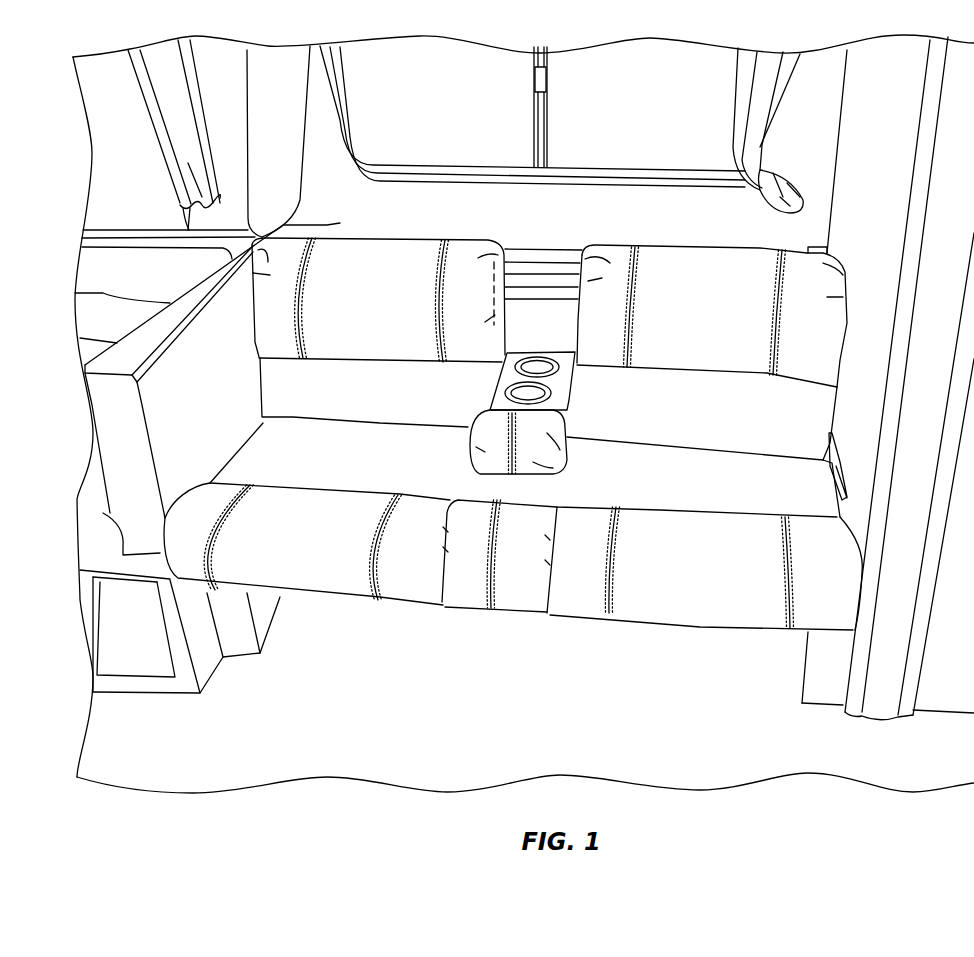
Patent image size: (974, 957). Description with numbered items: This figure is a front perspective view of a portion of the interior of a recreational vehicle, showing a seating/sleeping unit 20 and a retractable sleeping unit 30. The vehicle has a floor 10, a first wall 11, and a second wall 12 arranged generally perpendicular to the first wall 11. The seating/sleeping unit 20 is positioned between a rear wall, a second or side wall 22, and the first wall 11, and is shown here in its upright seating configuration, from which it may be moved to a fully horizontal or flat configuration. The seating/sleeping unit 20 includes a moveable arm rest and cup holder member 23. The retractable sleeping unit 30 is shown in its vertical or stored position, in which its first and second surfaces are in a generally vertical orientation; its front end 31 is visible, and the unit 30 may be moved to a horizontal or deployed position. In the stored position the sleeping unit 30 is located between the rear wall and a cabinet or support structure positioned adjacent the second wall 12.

The floor 10 is at (575, 694).
The first wall 11 is at (893, 158).
The second wall 12 is at (820, 148).
The seating/sleeping unit 20 is at (471, 450).
The second or side wall 22 is at (195, 420).
The moveable arm rest and cup holder member 23 is at (553, 465).
The retractable sleeping unit 30 is at (528, 246).
The front end 31 is at (567, 255).